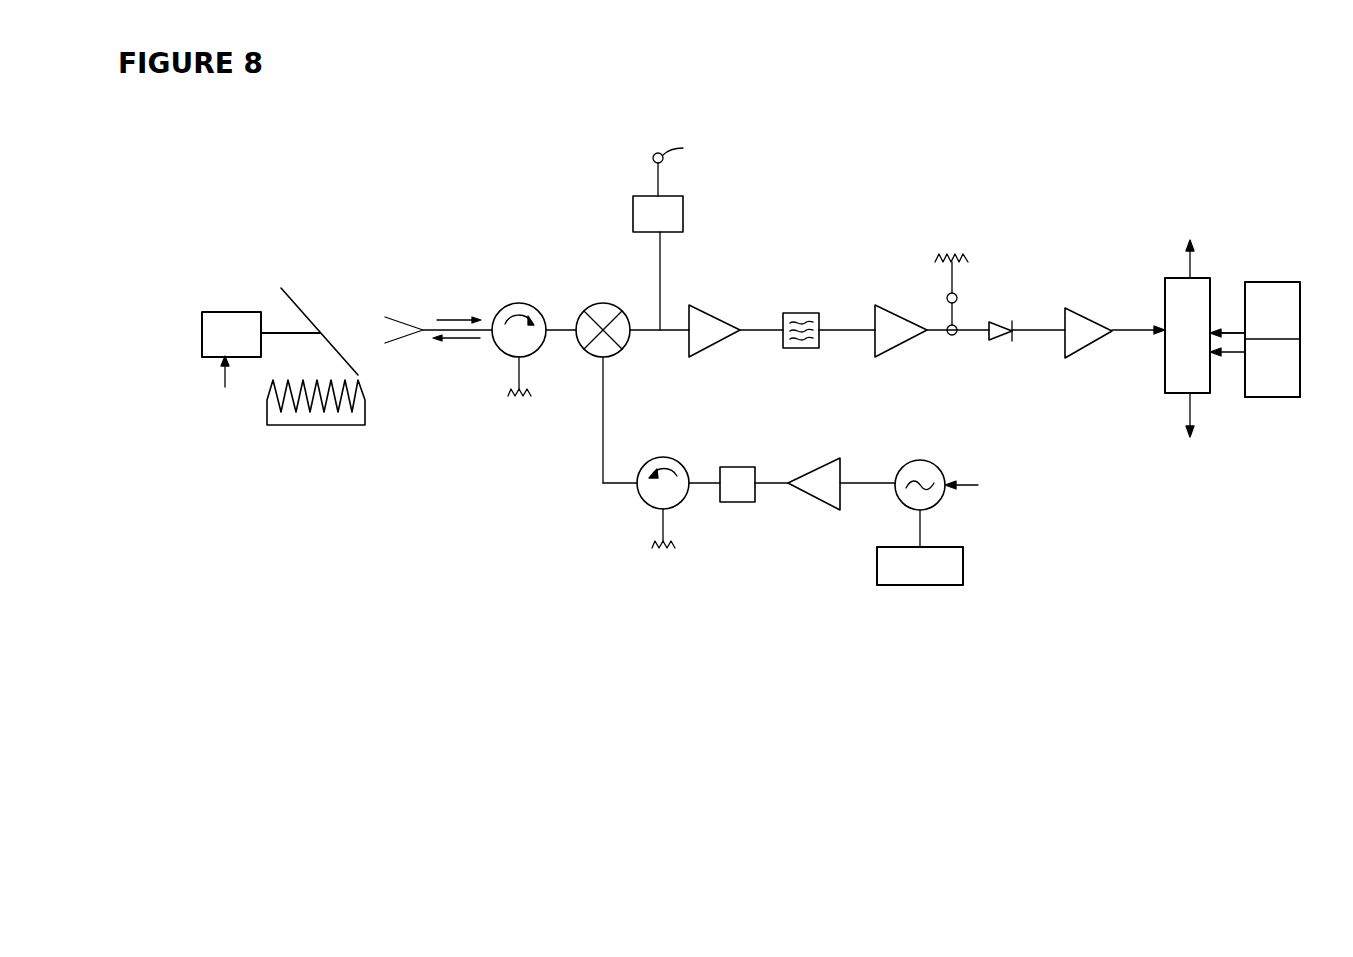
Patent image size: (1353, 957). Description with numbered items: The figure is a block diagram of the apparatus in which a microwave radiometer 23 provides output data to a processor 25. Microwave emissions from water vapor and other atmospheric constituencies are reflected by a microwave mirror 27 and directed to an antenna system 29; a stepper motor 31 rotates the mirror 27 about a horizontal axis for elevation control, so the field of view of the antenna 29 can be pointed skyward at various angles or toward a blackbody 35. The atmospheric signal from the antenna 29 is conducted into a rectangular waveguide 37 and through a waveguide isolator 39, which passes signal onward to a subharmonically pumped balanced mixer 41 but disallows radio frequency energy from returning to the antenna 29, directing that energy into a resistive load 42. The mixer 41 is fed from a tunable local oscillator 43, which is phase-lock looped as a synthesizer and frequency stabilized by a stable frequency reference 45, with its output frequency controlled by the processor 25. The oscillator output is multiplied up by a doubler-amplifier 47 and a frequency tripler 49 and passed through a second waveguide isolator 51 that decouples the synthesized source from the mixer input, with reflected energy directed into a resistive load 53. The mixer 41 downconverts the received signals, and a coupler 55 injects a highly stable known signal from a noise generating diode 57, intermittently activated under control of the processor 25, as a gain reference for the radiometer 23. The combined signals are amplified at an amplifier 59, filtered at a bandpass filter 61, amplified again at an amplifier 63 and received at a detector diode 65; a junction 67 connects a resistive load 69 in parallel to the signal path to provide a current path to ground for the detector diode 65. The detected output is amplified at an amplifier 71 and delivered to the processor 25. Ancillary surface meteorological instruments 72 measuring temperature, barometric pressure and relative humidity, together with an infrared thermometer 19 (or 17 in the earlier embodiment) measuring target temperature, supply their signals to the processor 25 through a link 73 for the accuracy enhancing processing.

The microwave radiometer 23 is at (868, 148).
The processor 25 is at (1165, 374).
The microwave mirror 27 is at (320, 318).
The antenna system 29 is at (397, 318).
The stepper motor 31 is at (231, 311).
The blackbody 35 is at (319, 425).
The rectangular waveguide 37 is at (452, 342).
The waveguide isolator 39 is at (504, 306).
The subharmonically pumped balanced mixer 41 is at (602, 303).
The resistive load 42 is at (512, 398).
The tunable local oscillator 43 is at (922, 460).
The stable frequency reference 45 is at (920, 586).
The doubler-amplifier 47 is at (812, 471).
The frequency tripler 49 is at (745, 466).
The waveguide isolator 51 is at (672, 461).
The resistive load 53 is at (670, 560).
The coupler 55 is at (658, 322).
The noise generating diode 57 is at (683, 213).
The amplifier 59 is at (729, 320).
The bandpass filter 61 is at (805, 313).
The amplifier 63 is at (901, 311).
The detector diode 65 is at (1003, 321).
The junction 67 is at (953, 337).
The resistive load 69 is at (962, 253).
The amplifier 71 is at (1110, 320).
The ancillary surface meteorological instruments 72 is at (1282, 290).
The link 73 is at (1226, 330).
The infrared thermometer 17 is at (1260, 395).
The infrared thermometer 19 is at (1272, 368).